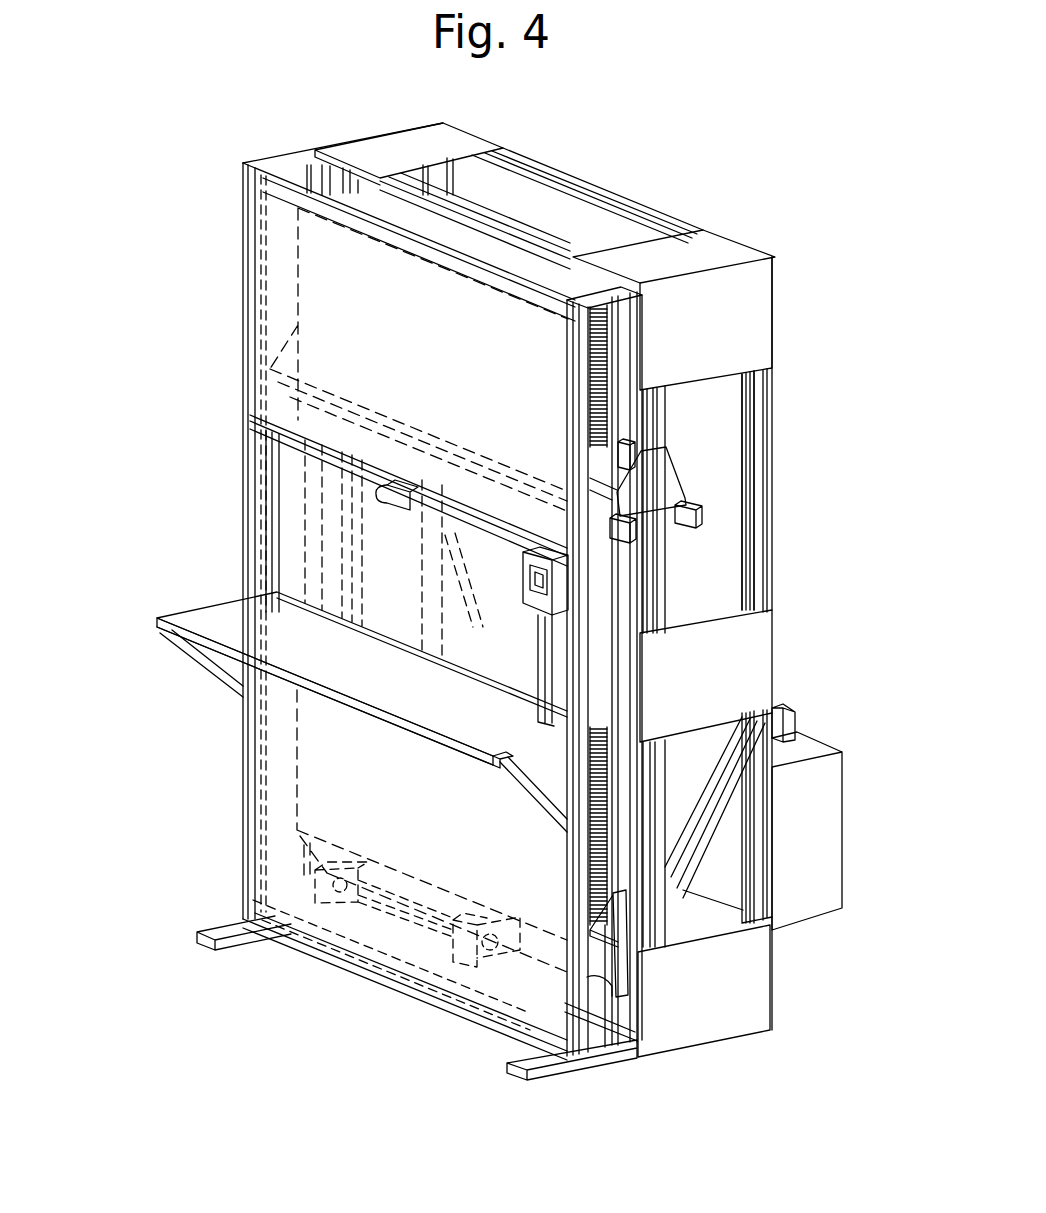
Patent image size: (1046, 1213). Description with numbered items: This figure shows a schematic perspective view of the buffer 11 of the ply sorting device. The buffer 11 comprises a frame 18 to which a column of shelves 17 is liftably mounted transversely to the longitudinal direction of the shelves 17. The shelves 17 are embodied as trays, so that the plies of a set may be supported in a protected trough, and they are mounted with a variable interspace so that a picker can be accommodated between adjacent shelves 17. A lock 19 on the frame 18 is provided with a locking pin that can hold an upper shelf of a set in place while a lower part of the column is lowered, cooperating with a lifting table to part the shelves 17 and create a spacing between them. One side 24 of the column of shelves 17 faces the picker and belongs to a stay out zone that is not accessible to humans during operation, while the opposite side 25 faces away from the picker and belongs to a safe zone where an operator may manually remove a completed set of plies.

The buffer 11 is at (840, 236).
The shelves 17 is at (600, 852).
The frame 18 is at (764, 547).
The lock 19 is at (693, 516).
The side 24 is at (838, 697).
The opposite side 25 is at (205, 498).